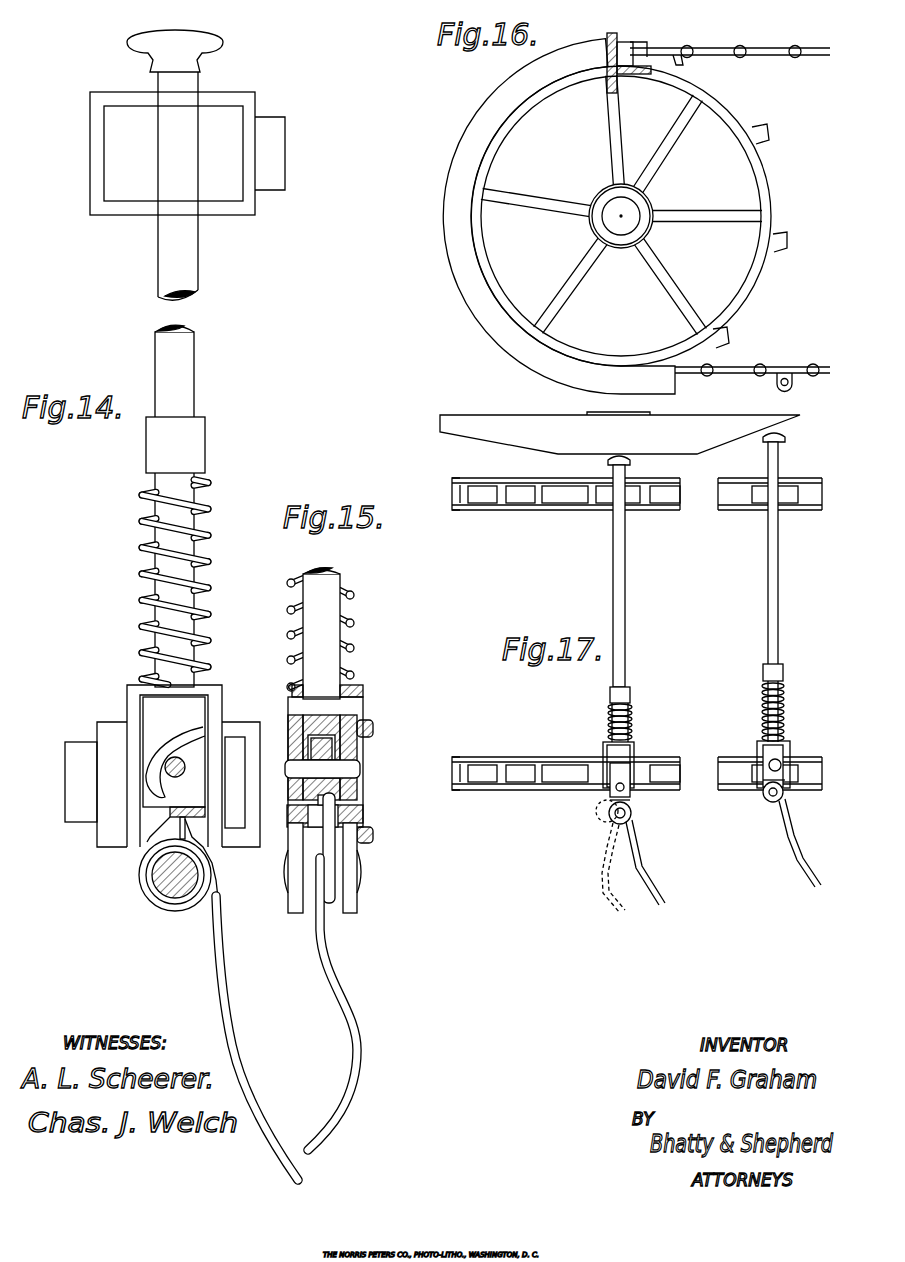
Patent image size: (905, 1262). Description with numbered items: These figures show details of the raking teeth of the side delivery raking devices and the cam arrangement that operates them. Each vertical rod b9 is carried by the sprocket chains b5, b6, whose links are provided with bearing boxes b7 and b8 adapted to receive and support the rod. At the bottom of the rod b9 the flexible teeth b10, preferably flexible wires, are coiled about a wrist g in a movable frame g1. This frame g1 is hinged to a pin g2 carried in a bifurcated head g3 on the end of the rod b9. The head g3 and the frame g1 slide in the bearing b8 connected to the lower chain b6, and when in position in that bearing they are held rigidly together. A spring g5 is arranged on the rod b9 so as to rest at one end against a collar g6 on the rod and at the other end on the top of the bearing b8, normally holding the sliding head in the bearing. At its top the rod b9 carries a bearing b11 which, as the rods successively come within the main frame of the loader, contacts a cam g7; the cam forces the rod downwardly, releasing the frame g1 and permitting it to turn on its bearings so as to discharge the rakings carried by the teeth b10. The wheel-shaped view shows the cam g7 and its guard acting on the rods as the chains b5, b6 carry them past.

In FIG. 14, the bearing b11 is at (205, 44).
In FIG. 17, the bearing b11 is at (623, 455).
In FIG. 14, the bearing box b7 is at (255, 210).
In FIG. 16, the bearing box b7 is at (785, 372).
In FIG. 17, the bearing box b7 is at (627, 510).
In FIG. 14, the vertical rod b9 is at (183, 375).
In FIG. 15, the vertical rod b9 is at (320, 614).
In FIG. 17, the vertical rod b9 is at (622, 622).
In FIG. 14, the collar g6 is at (196, 445).
In FIG. 17, the collar g6 is at (620, 693).
In FIG. 14, the spring g5 is at (207, 562).
In FIG. 15, the spring g5 is at (354, 591).
In FIG. 17, the spring g5 is at (608, 722).
In FIG. 14, the bifurcated head g3 is at (185, 707).
In FIG. 15, the bifurcated head g3 is at (357, 720).
In FIG. 17, the bifurcated head g3 is at (770, 750).
In FIG. 14, the pin g2 is at (185, 758).
In FIG. 15, the pin g2 is at (337, 767).
In FIG. 17, the pin g2 is at (778, 763).
In FIG. 14, the bearing box b8 is at (78, 793).
In FIG. 15, the bearing box b8 is at (360, 684).
In FIG. 17, the bearing box b8 is at (634, 745).
In FIG. 14, the movable frame g1 is at (152, 847).
In FIG. 15, the movable frame g1 is at (352, 843).
In FIG. 17, the movable frame g1 is at (763, 792).
In FIG. 14, the wrist g is at (175, 887).
In FIG. 15, the wrist g is at (336, 868).
In FIG. 17, the wrist g is at (772, 798).
In FIG. 14, the flexible teeth b10 is at (238, 1058).
In FIG. 15, the flexible teeth b10 is at (362, 1040).
In FIG. 17, the flexible teeth b10 is at (658, 903).
In FIG. 16, the cam g7 is at (457, 157).
In FIG. 17, the cam g7 is at (518, 426).
In FIG. 17, the sprocket chain b5 is at (483, 503).
In FIG. 17, the sprocket chain b6 is at (520, 790).